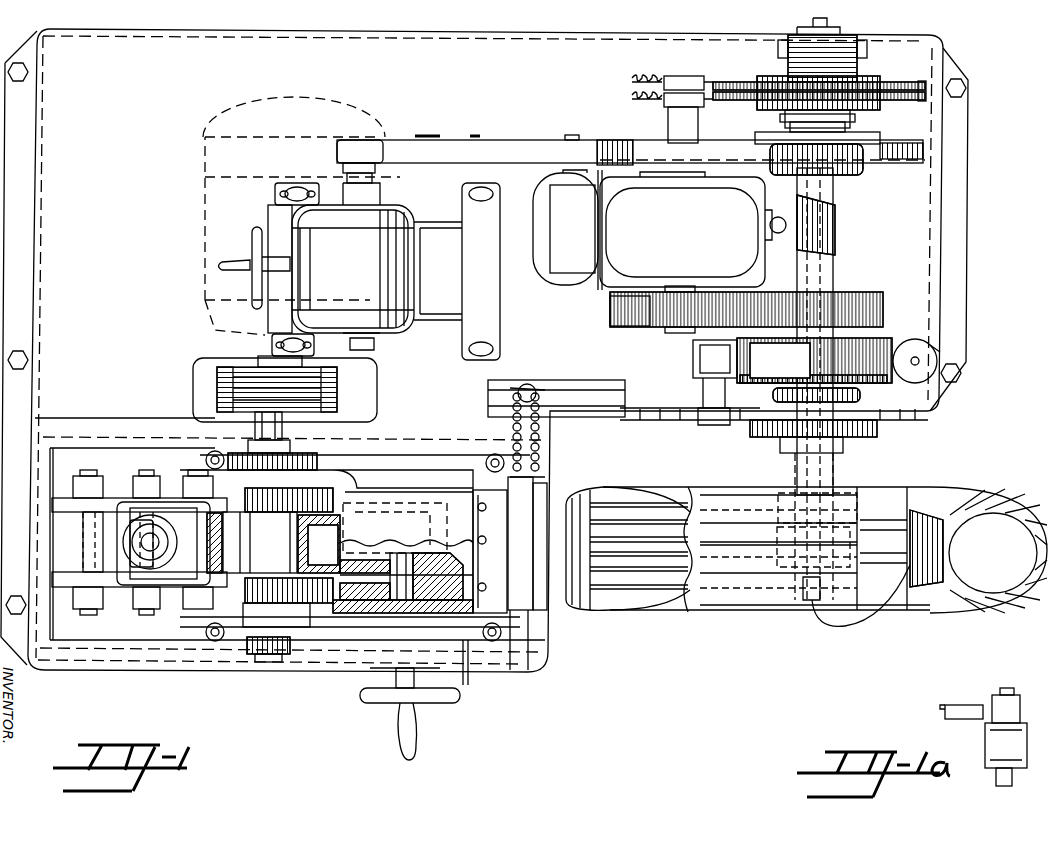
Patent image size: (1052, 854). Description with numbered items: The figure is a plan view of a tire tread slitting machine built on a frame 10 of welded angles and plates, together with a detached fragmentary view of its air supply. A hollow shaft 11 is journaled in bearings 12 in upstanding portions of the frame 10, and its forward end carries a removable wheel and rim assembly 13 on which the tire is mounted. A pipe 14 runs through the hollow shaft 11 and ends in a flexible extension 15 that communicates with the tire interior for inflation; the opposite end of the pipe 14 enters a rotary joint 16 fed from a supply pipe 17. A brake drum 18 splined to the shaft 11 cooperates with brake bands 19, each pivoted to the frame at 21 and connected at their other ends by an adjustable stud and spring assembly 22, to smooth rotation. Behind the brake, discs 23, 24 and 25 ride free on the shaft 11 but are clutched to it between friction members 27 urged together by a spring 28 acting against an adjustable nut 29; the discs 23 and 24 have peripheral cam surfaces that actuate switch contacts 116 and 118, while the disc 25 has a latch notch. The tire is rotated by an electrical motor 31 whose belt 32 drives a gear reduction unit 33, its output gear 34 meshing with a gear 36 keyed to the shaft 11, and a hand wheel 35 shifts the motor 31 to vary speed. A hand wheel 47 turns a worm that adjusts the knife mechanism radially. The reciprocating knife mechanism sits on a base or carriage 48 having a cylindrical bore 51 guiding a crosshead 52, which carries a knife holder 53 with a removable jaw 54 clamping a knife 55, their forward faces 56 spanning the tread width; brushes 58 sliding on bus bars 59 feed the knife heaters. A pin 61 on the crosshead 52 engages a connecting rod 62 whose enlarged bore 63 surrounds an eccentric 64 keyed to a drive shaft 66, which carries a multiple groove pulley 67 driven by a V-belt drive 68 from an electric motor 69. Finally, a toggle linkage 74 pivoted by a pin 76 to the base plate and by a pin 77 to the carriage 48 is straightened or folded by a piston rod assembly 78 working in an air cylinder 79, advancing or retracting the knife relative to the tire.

In FIG. 1, the frame 10 is at (950, 272).
In FIG. 1, the hollow shaft 11 is at (825, 477).
In FIG. 1, the bearings 12 is at (880, 140).
In FIG. 1, the wheel and rim assembly 13 is at (890, 500).
In FIG. 1, the pipe 14 is at (822, 210).
In FIG. 1A, the pipe 14 is at (998, 778).
In FIG. 1, the flexible extension 15 is at (860, 623).
In FIG. 1A, the rotary joint 16 is at (1000, 742).
In FIG. 1A, the pipe 17 is at (965, 708).
In FIG. 1, the brake drum 18 is at (890, 352).
In FIG. 1, the brake shoes or bands 19 is at (764, 372).
In FIG. 1, the pivotal mounting 21 is at (698, 355).
In FIG. 1, the stud and spring assembly 22 is at (937, 352).
In FIG. 1, the disc 23 is at (926, 101).
In FIG. 1, the disc 24 is at (927, 87).
In FIG. 1, the disc 25 is at (927, 96).
In FIG. 1, the friction members 27 is at (805, 108).
In FIG. 1, the spring 28 is at (790, 68).
In FIG. 1, the adjustable nut 29 is at (858, 48).
In FIG. 1, the electrical motor 31 is at (358, 215).
In FIG. 1, the belt 32 is at (480, 150).
In FIG. 1, the gear reduction unit 33 is at (664, 238).
In FIG. 1, the gear 34 is at (632, 305).
In FIG. 1, the gear 36 is at (857, 310).
In FIG. 1, the hand wheel 35 is at (250, 243).
In FIG. 1, the hand wheel 47 is at (417, 700).
In FIG. 1, the base or carriage 48 is at (458, 468).
In FIG. 1, the cylindrical bore 51 is at (468, 665).
In FIG. 1, the crosshead 52 is at (425, 602).
In FIG. 1, the knife holder 53 is at (525, 600).
In FIG. 1, the removable jaw 54 is at (500, 590).
In FIG. 1, the knife 55 is at (547, 500).
In FIG. 1, the forward faces 56 is at (540, 480).
In FIG. 1, the brushes 58 is at (545, 408).
In FIG. 1, the bus bars 59 is at (600, 400).
In FIG. 1, the pin 61 is at (402, 602).
In FIG. 1, the connecting rod 62 is at (308, 554).
In FIG. 1, the enlarged bore 63 is at (203, 560).
In FIG. 1, the eccentric 64 is at (226, 554).
In FIG. 1, the drive shaft 66 is at (265, 663).
In FIG. 1, the multiple groove pulley 67 is at (245, 365).
In FIG. 1, the multiple V-belt drive 68 is at (217, 398).
In FIG. 1, the electric motor 69 is at (205, 272).
In FIG. 1, the toggle linkage 74 is at (125, 490).
In FIG. 1, the pin 76 is at (85, 545).
In FIG. 1, the pin 77 is at (205, 502).
In FIG. 1, the piston rod assembly 78 is at (142, 525).
In FIG. 1, the air cylinder 79 is at (132, 545).
In FIG. 1, the switch contact 116 is at (698, 78).
In FIG. 1, the switch contact 118 is at (685, 102).